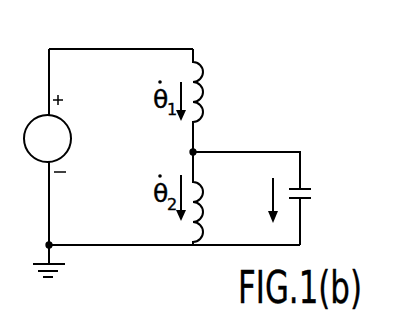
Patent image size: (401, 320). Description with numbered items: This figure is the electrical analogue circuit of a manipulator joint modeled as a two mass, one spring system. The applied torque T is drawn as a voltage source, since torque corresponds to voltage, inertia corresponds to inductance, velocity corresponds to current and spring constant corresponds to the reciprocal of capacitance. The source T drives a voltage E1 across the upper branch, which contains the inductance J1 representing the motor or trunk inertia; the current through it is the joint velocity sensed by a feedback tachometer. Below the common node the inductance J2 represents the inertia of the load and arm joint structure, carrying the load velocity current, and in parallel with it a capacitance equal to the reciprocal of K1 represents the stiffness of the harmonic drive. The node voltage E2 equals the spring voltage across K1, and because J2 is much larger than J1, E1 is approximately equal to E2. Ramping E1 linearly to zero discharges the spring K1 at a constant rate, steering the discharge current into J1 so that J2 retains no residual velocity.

The applied torque T is at (47, 133).
The voltage E1 is at (52, 48).
The voltage E2 is at (195, 151).
The motor or trunk inertia J1 is at (215, 100).
The inertia of the load and arm joint structure J2 is at (215, 198).
The stiffness of a harmonic drive K1 is at (318, 183).